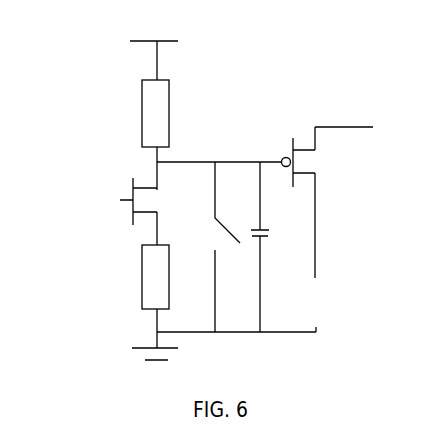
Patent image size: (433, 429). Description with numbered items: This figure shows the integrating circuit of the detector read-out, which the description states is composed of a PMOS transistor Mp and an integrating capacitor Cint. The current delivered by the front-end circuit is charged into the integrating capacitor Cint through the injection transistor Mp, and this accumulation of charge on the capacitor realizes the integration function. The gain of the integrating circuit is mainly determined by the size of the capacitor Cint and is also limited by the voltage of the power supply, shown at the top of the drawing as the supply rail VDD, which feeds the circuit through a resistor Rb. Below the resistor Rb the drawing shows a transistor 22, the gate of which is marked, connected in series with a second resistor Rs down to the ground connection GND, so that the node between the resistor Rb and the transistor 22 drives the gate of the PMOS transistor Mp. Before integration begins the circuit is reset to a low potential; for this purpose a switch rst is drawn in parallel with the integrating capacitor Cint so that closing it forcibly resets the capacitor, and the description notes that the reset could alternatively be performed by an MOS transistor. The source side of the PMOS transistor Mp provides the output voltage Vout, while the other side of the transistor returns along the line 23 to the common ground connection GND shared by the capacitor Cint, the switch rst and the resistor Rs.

The transistor 22 is at (113, 211).
The output line 23 is at (298, 252).
The bias resistor Rb is at (140, 113).
The source resistor Rs is at (141, 277).
The integrating capacitor Cint is at (277, 247).
The PMOS transistor Mp is at (320, 157).
The switch rst is at (211, 247).
The power supply voltage VDD is at (154, 46).
The output voltage Vout is at (344, 113).
The ground GND is at (125, 351).